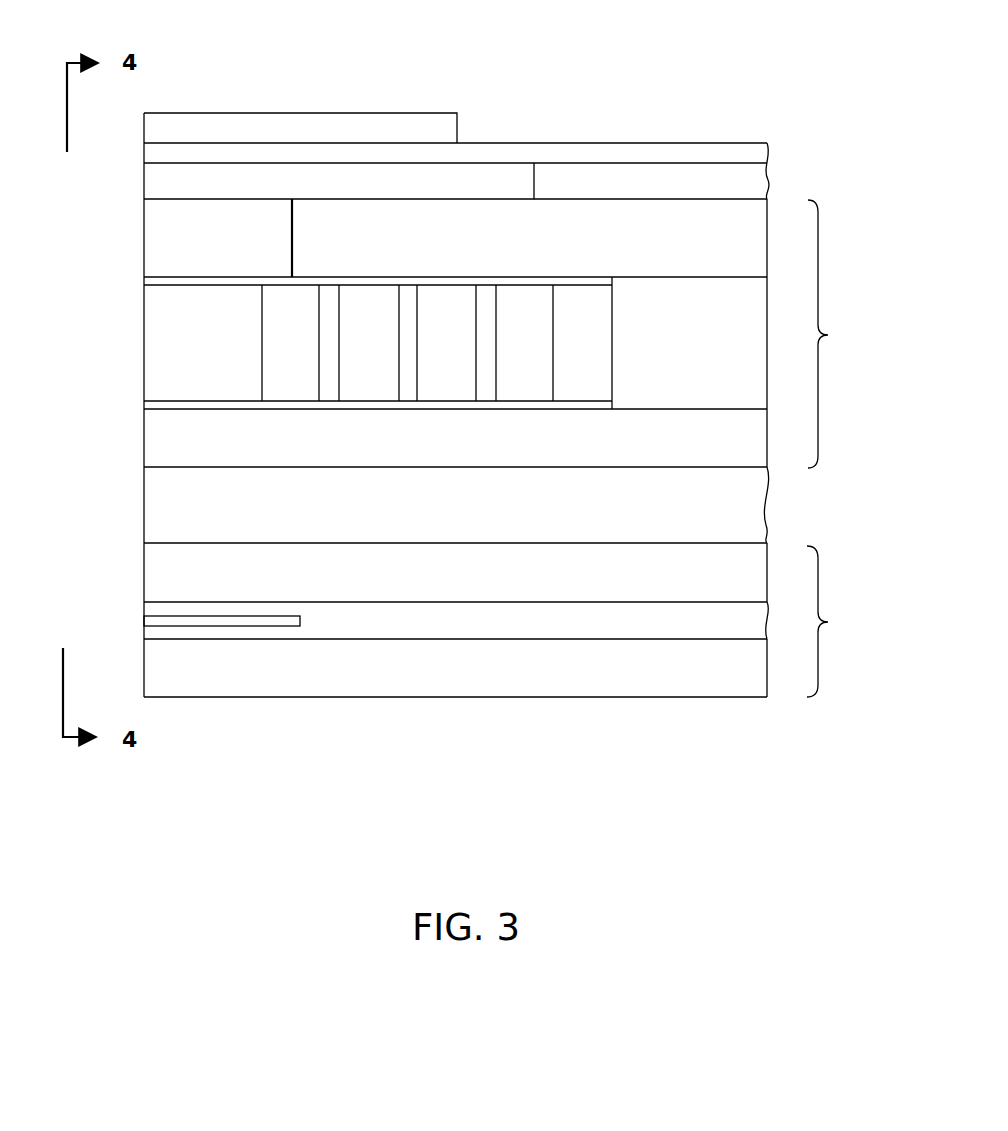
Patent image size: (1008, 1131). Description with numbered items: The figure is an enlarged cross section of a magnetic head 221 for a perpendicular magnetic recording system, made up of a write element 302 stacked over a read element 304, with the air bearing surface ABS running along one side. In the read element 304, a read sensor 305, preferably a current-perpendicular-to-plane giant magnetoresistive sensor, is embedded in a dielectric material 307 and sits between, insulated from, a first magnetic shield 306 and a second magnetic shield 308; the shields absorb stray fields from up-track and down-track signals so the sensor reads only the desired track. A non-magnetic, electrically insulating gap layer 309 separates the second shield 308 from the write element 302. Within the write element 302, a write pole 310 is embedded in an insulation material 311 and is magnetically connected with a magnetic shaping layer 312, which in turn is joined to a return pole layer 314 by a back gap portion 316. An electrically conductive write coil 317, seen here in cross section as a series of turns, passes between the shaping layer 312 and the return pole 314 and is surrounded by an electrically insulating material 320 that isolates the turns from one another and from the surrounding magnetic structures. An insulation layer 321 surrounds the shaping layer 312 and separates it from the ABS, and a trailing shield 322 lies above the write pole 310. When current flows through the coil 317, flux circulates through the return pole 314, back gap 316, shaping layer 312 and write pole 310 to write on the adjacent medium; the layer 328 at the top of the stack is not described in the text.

The magnetic head 221 is at (504, 60).
The write element 302 is at (822, 240).
The read element 304 is at (820, 558).
The read sensor 305 is at (300, 620).
The first magnetic shield 306 is at (385, 665).
The dielectric material 307 is at (635, 622).
The second magnetic shield 308 is at (395, 575).
The gap layer 309 is at (408, 505).
The write pole 310 is at (240, 181).
The insulation material 311 is at (656, 181).
The magnetic shaping layer 312 is at (395, 240).
The return pole layer 314 is at (395, 440).
The back gap portion 316 is at (648, 348).
The write coil 317 is at (407, 343).
The electrically insulating material 320 is at (508, 278).
The insulation layer 321 is at (173, 238).
The trailing shield 322 is at (435, 128).
The overcoat layer 328 is at (347, 152).
The air bearing surface ABS is at (144, 500).